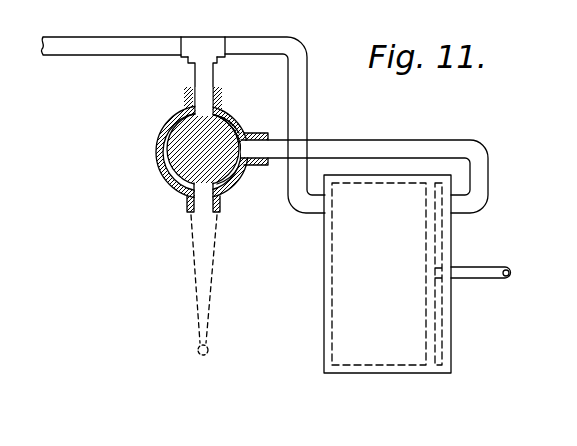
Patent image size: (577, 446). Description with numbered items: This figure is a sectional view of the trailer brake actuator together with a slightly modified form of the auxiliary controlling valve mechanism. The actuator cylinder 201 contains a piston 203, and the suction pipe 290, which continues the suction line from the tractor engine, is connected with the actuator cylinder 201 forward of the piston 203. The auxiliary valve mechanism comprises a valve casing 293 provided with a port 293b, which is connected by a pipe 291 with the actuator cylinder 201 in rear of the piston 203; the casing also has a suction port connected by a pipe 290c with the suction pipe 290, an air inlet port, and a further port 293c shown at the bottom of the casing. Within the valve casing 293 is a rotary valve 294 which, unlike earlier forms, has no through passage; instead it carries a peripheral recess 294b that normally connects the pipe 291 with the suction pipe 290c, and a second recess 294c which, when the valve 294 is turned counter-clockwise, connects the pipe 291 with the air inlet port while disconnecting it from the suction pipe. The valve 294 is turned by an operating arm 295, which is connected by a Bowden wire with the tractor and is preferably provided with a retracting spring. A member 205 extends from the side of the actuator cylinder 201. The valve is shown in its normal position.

The suction pipe 290 is at (135, 40).
The pipe 290c is at (195, 71).
The pipe 291 is at (443, 141).
The valve casing 293 is at (160, 166).
The port 293b is at (253, 133).
The housing bottom port 293c is at (189, 201).
The rotary valve 294 is at (162, 133).
The peripheral recess 294b is at (259, 93).
The recess 294c is at (226, 196).
The operating arm 295 is at (191, 273).
The actuator cylinder 201 is at (333, 277).
The piston 203 is at (427, 240).
The outlet tube 205 is at (492, 272).